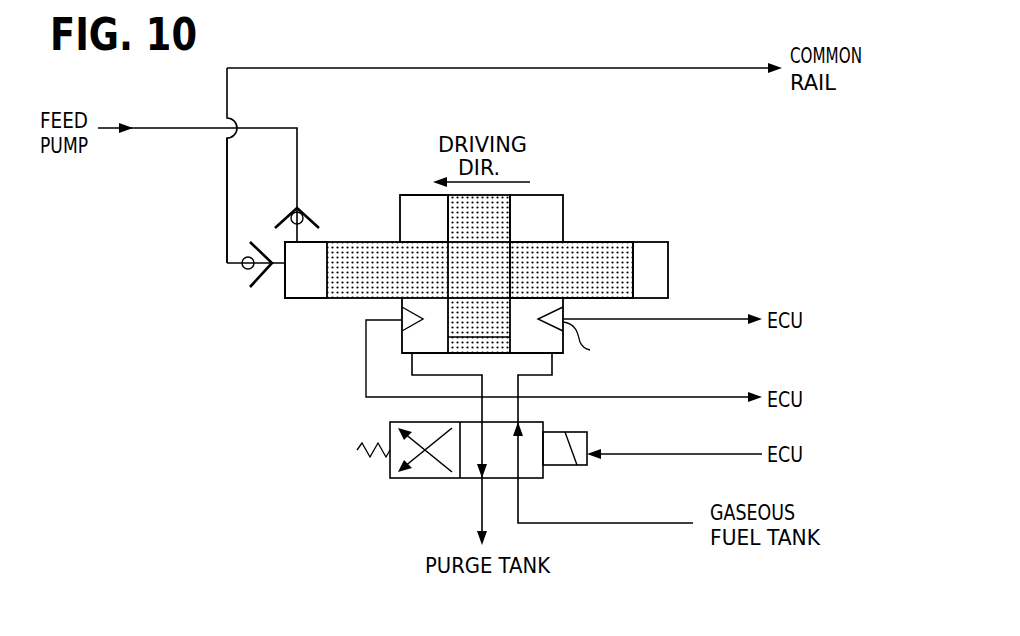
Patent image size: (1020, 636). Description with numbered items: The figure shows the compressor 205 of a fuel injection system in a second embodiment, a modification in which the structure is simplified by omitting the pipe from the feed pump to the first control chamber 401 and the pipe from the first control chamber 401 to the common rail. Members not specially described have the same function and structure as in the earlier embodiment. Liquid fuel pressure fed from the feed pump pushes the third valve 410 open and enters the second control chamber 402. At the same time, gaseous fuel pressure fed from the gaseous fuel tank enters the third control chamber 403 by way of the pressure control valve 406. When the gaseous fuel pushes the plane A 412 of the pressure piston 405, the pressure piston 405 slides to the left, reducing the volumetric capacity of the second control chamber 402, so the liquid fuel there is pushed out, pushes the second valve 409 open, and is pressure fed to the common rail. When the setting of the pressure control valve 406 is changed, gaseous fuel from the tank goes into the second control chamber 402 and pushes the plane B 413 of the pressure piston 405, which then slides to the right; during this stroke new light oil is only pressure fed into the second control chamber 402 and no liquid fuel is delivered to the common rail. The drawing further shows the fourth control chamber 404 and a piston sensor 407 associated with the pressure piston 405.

The compressor 205 is at (265, 230).
The first control chamber 401 is at (650, 252).
The second control chamber 402 is at (309, 292).
The third control chamber 403 is at (542, 217).
The fourth control chamber 404 is at (418, 220).
The pressure piston 405 is at (588, 252).
The pressure control valve 406 is at (424, 492).
The piston sensor 407 is at (405, 326).
The second valve 409 is at (245, 269).
The third valve 410 is at (292, 212).
The plane A 412 is at (512, 205).
The plane B 413 is at (440, 203).